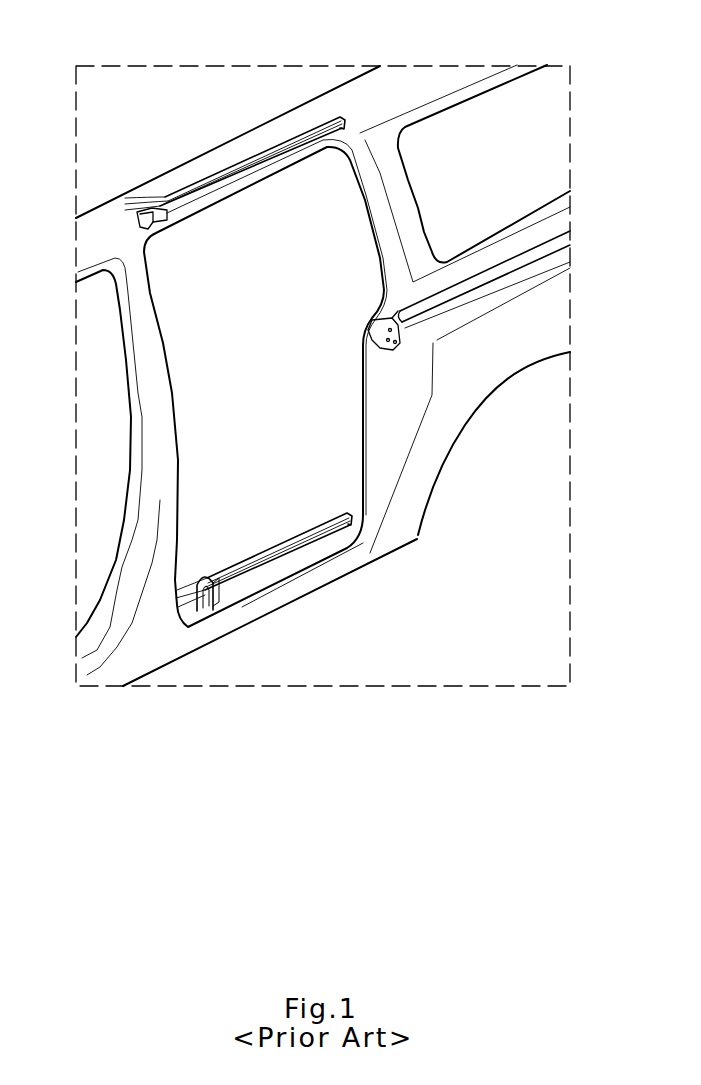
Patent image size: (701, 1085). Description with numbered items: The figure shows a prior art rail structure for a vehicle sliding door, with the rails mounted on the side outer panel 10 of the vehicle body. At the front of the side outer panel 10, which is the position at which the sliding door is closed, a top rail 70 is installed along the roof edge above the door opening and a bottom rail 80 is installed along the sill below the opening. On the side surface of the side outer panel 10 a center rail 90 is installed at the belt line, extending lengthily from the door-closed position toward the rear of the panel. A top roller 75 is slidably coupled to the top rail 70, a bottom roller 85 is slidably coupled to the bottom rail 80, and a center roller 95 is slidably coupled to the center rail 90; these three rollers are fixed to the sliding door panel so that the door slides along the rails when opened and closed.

The side outer panel 10 is at (507, 348).
The top rail 70 is at (243, 170).
The top roller 75 is at (138, 218).
The bottom rail 80 is at (257, 565).
The bottom roller 85 is at (203, 610).
The center rail 90 is at (537, 258).
The center roller 95 is at (400, 345).